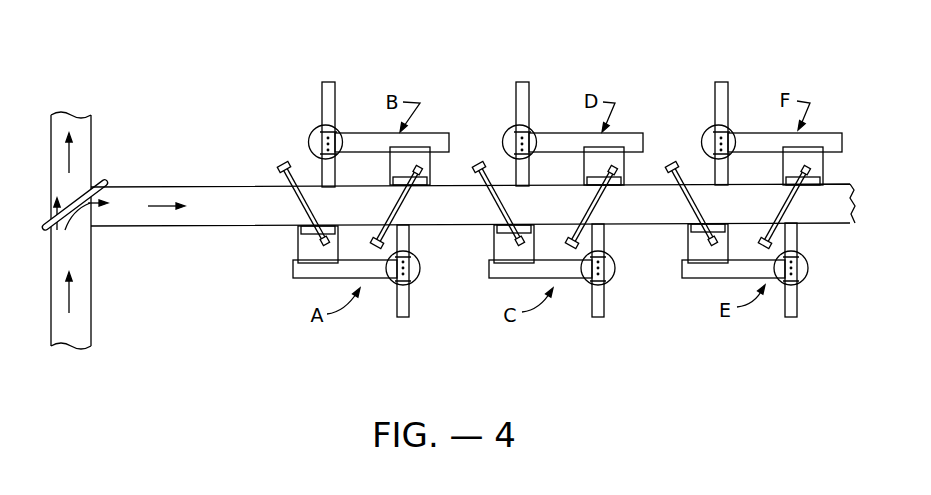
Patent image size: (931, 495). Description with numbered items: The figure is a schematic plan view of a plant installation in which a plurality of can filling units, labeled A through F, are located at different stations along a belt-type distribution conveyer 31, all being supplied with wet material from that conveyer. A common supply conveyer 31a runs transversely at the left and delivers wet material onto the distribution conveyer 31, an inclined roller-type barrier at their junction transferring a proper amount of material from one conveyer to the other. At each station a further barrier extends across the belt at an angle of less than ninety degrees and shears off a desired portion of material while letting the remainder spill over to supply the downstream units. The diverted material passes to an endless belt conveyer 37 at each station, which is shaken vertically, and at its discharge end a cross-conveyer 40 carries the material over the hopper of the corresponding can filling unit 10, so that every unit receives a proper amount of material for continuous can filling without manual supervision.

The can filling unit 10 is at (420, 291).
The distribution conveyer 31 is at (156, 219).
The common supply conveyer 31a is at (85, 305).
The endless belt conveyer 37 is at (307, 248).
The cross-conveyer 40 is at (335, 273).